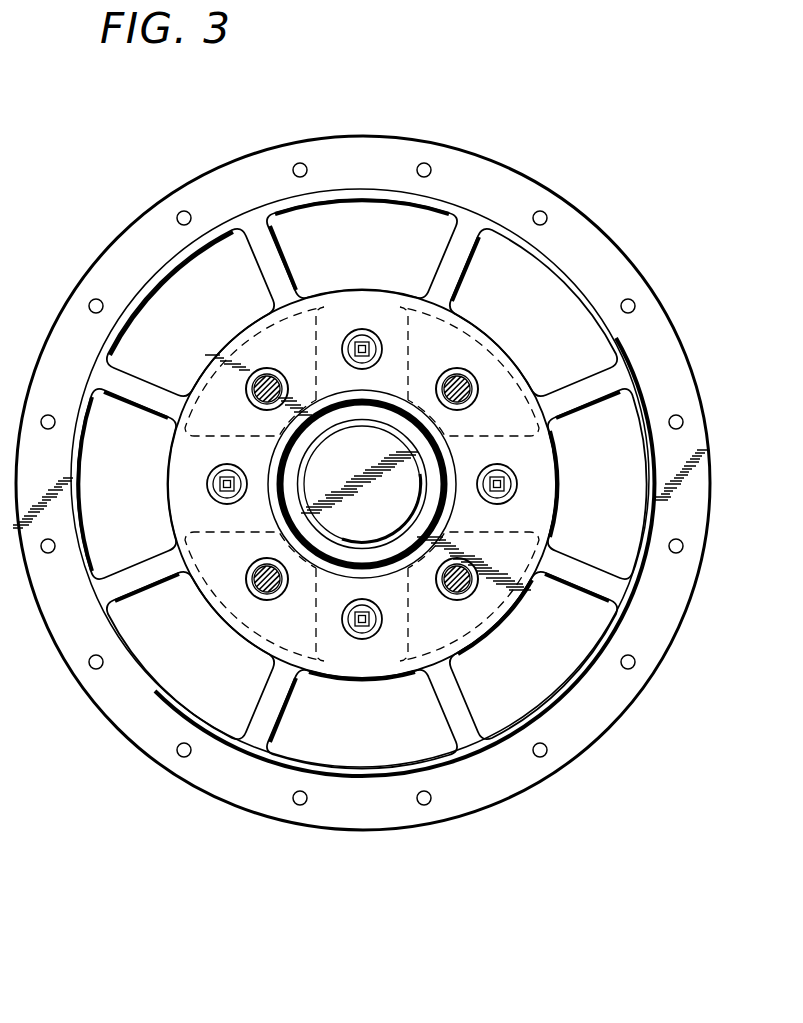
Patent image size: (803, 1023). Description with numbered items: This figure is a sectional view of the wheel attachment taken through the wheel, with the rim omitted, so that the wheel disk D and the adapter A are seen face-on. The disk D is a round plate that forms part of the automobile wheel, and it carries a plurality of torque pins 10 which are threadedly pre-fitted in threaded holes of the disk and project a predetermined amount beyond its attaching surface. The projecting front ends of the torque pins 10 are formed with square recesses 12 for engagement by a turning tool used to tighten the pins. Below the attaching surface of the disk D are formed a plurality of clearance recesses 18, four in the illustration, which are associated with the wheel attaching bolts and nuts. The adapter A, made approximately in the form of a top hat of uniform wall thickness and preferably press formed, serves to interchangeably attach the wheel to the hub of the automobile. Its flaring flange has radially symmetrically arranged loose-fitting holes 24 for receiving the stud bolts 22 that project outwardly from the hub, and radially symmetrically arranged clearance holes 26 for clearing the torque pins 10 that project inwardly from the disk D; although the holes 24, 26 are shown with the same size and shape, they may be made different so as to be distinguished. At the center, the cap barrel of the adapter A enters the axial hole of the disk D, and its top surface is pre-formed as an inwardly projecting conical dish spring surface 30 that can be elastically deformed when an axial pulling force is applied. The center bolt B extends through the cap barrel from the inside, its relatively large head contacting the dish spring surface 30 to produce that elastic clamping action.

The torque pins 10 is at (365, 330).
The square recesses 12 is at (498, 487).
The clearance recesses 18 is at (465, 347).
The stud bolts 22 is at (258, 589).
The loose-fitting holes 24 is at (274, 373).
The clearance holes 26 is at (364, 640).
The dish spring surface 30 is at (365, 550).
The adapter A is at (500, 619).
The center bolt B is at (410, 474).
The disk D is at (117, 248).